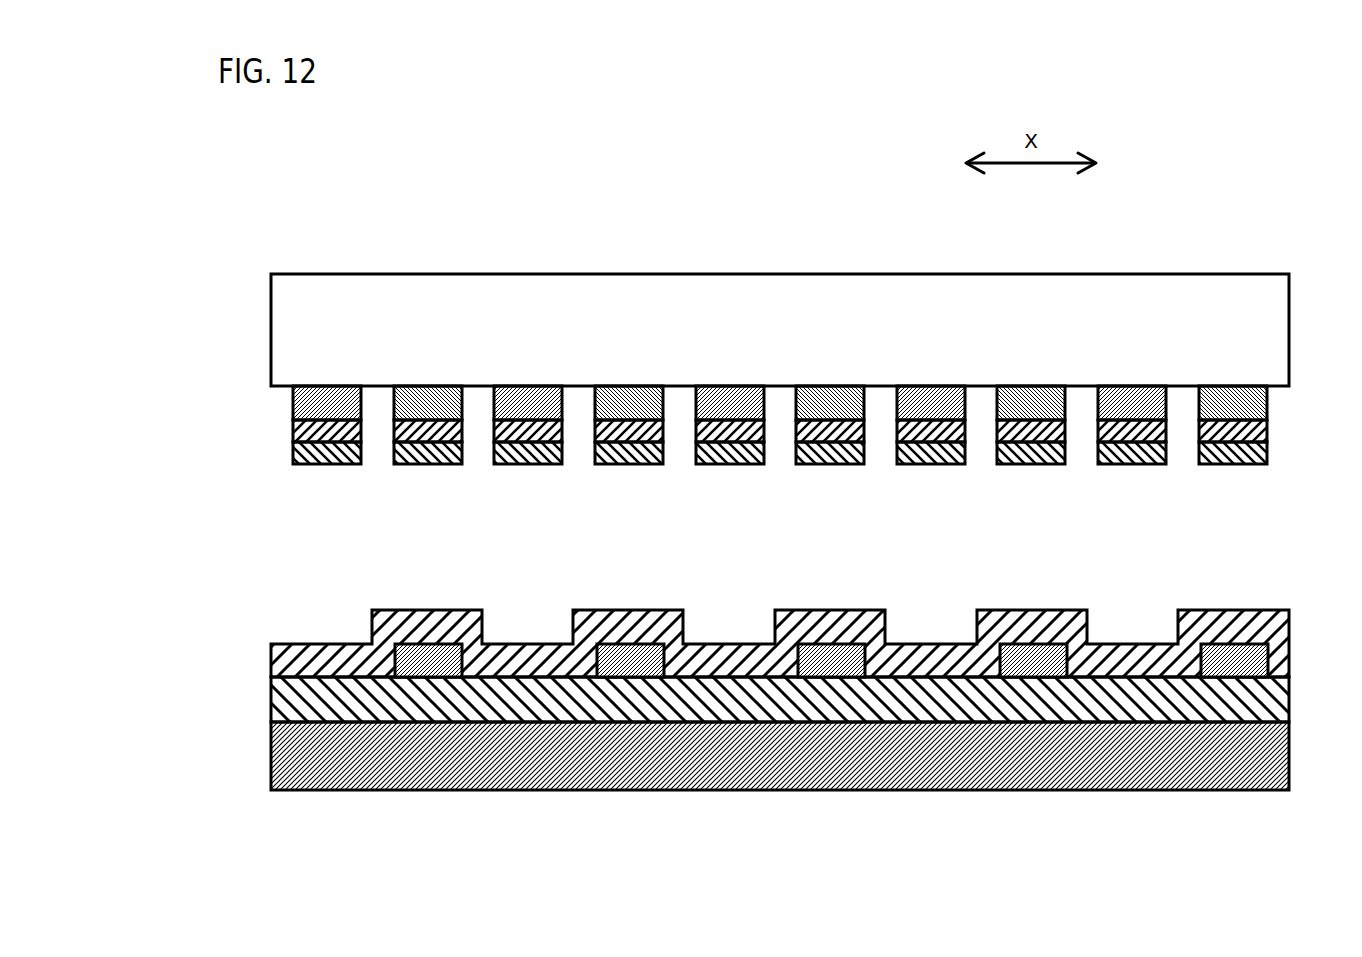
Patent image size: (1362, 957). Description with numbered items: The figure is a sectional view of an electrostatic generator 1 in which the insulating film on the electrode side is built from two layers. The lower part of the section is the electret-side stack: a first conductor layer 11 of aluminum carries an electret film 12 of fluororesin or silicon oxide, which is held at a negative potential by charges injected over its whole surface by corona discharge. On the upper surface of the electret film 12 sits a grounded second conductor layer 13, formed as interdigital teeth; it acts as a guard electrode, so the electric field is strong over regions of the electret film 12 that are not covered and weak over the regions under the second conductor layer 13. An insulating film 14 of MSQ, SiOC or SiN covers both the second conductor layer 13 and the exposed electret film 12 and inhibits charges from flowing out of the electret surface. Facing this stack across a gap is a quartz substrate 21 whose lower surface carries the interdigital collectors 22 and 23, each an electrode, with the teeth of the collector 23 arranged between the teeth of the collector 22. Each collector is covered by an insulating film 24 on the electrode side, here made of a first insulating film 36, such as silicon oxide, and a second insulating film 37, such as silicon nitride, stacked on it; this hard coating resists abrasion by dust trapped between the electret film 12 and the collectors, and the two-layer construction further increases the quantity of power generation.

The liquid ejecting head 1 is at (1290, 212).
The first conductor layer 11 is at (933, 757).
The electret film 12 is at (730, 700).
The second conductor layer 13 is at (428, 660).
The insulating film 14 is at (505, 668).
The substrate 21 is at (1271, 297).
The collector 22 is at (327, 400).
The collector 23 is at (428, 400).
The insulating film 24 is at (725, 441).
The first bump layer 36 is at (294, 431).
The second bump layer 37 is at (294, 448).